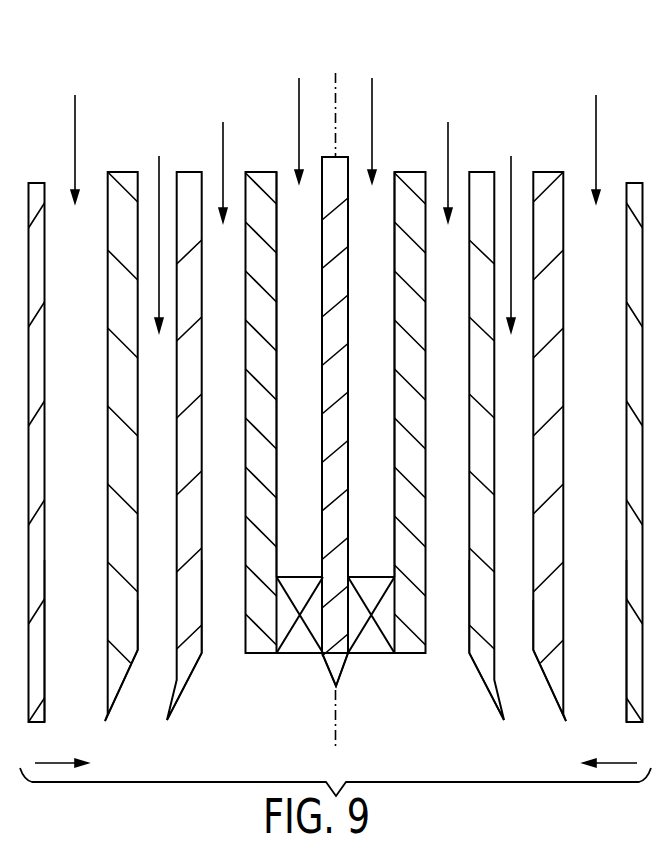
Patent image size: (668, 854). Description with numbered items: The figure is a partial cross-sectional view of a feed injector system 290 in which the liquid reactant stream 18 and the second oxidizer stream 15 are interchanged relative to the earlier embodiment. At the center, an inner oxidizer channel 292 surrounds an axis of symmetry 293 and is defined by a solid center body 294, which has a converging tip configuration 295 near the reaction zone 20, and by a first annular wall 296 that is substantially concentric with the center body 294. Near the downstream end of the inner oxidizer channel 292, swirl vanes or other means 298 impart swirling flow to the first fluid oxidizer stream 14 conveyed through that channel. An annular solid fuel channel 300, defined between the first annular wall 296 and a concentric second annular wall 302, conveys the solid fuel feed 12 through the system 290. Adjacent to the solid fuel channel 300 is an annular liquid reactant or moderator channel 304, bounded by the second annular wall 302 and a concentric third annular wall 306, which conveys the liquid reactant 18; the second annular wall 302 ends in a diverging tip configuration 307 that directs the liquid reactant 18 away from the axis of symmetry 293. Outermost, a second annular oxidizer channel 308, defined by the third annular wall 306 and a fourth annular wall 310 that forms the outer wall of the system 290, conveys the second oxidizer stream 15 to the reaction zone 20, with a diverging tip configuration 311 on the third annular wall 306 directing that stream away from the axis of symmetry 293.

The feed injector system 290 is at (147, 73).
The second oxidizer stream 15 is at (75, 123).
The liquid reactant stream 18 is at (159, 156).
The solid fuel feed 12 is at (224, 138).
The first fluid oxidizer stream 14 is at (300, 122).
The reaction zone 20 is at (45, 763).
The second annular oxidizer channel 308 is at (57, 183).
The annular liquid reactant or moderator channel 304 is at (148, 165).
The annular solid fuel channel 300 is at (213, 165).
The inner oxidizer channel 292 is at (288, 163).
The solid center body 294 is at (348, 367).
The first annular wall 296 is at (277, 292).
The swirl vanes or other means 298 is at (302, 577).
The second annular wall 302 is at (202, 612).
The converging tip configuration 295 is at (337, 687).
The axis of symmetry 293 is at (336, 723).
The fourth annular wall 310 is at (44, 652).
The diverging tip configuration 311 is at (105, 721).
The third annular wall 306 is at (138, 638).
The diverging tip configuration 307 is at (167, 720).